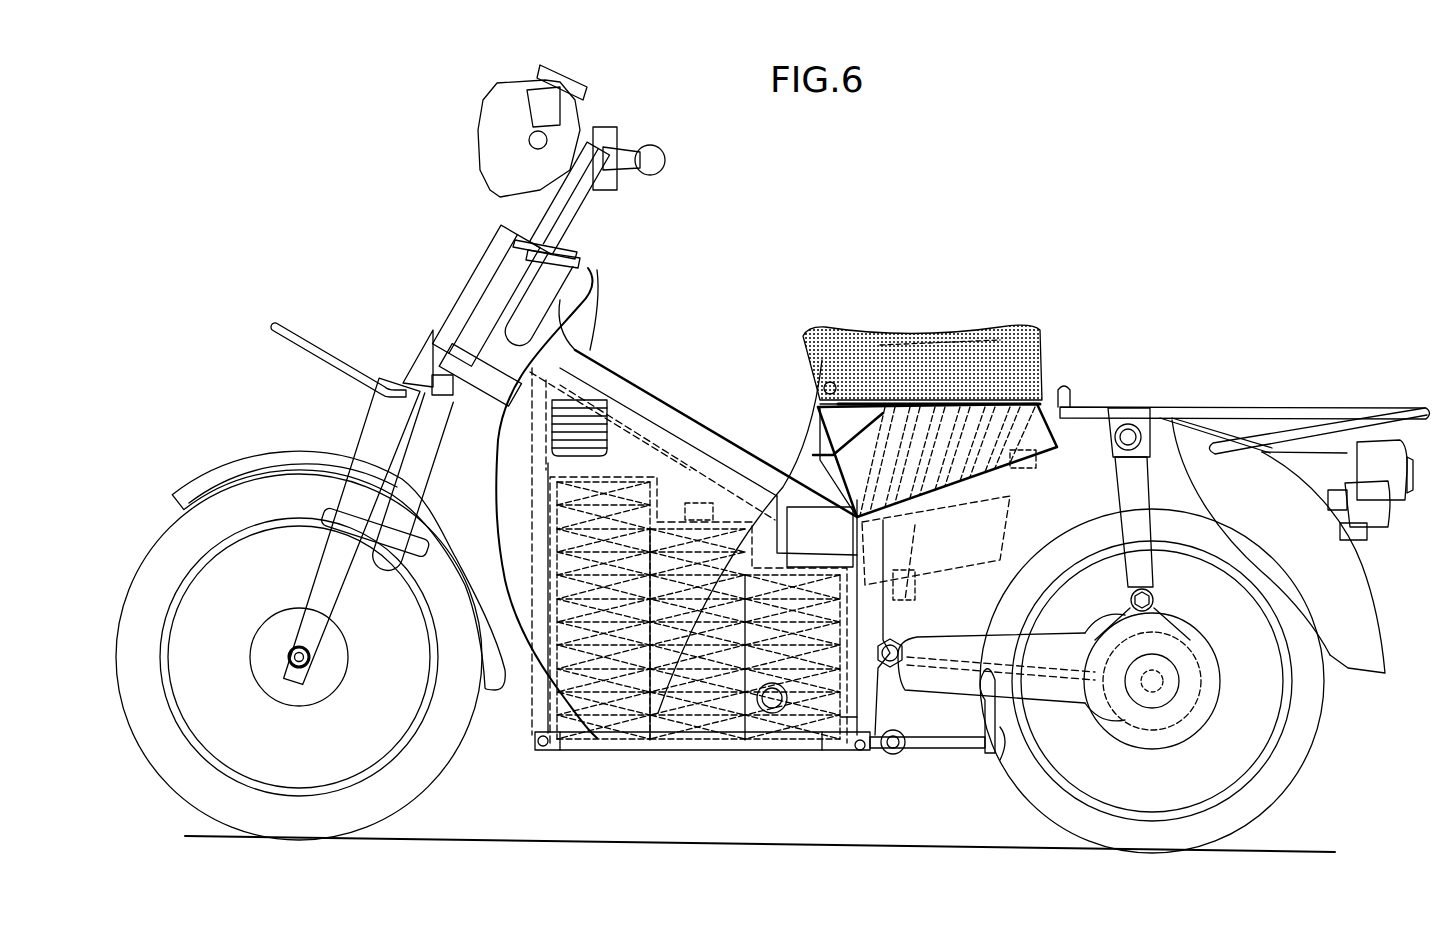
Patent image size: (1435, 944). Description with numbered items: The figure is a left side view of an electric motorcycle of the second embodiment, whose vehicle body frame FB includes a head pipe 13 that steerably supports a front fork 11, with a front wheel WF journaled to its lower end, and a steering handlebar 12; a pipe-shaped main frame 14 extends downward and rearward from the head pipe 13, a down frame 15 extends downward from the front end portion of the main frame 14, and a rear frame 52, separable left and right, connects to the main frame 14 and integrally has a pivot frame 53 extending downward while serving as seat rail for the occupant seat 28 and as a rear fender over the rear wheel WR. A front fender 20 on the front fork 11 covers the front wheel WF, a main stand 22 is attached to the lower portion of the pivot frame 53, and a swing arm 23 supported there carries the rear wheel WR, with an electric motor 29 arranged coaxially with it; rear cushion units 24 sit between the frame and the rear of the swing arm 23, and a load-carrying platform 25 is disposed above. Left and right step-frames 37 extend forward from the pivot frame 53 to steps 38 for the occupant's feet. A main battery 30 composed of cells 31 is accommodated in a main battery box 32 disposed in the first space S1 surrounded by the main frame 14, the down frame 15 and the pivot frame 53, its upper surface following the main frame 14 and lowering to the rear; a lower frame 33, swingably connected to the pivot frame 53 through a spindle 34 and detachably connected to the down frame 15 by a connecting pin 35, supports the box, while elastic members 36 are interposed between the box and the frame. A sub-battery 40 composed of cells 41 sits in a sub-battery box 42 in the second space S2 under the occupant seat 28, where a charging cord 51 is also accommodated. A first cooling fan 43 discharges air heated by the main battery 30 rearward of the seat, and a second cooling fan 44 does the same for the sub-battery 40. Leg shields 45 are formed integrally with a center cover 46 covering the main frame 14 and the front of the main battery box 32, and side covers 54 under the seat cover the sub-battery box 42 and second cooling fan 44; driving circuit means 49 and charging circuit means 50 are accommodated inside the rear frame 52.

The front fork 11 is at (390, 493).
The steering handlebar 12 is at (583, 190).
The head pipe 13 is at (530, 300).
The main frame 14 is at (678, 458).
The down frame 15 is at (525, 530).
The front fender 20 is at (293, 468).
The main stand 22 is at (990, 755).
The swing arm 23 is at (1068, 645).
The rear cushion unit 24 is at (1143, 538).
The load-carrying platform 25 is at (1255, 406).
The occupant seat 28 is at (893, 335).
The electric motor 29 is at (1202, 698).
The main battery 30 is at (672, 515).
The cells for a main battery 31 is at (690, 751).
The main battery box 32 is at (655, 400).
The lower frame 33 is at (574, 752).
The spindle 34 is at (885, 755).
The connecting pin 35 is at (538, 742).
The elastic member 36 is at (858, 525).
The step-frame 37 is at (822, 752).
The step 38 is at (773, 712).
The sub-battery 40 is at (955, 370).
The cells for a sub-battery 41 is at (907, 503).
The sub-battery box 42 is at (714, 510).
The first cooling fan 43 is at (917, 590).
The second cooling fan 44 is at (1030, 327).
The leg shield 45 is at (520, 568).
The center cover 46 is at (665, 405).
The driving circuit means 49 is at (957, 525).
The charging circuit means 50 is at (1013, 500).
The charging cord 51 is at (898, 345).
The rear frame 52 is at (1260, 497).
The pivot frame 53 is at (900, 693).
The side cover 54 is at (812, 422).
The vehicle body frame FB is at (662, 408).
The first space S1 is at (740, 536).
The second space S2 is at (838, 398).
The front wheel WF is at (255, 495).
The rear wheel WR is at (1298, 625).